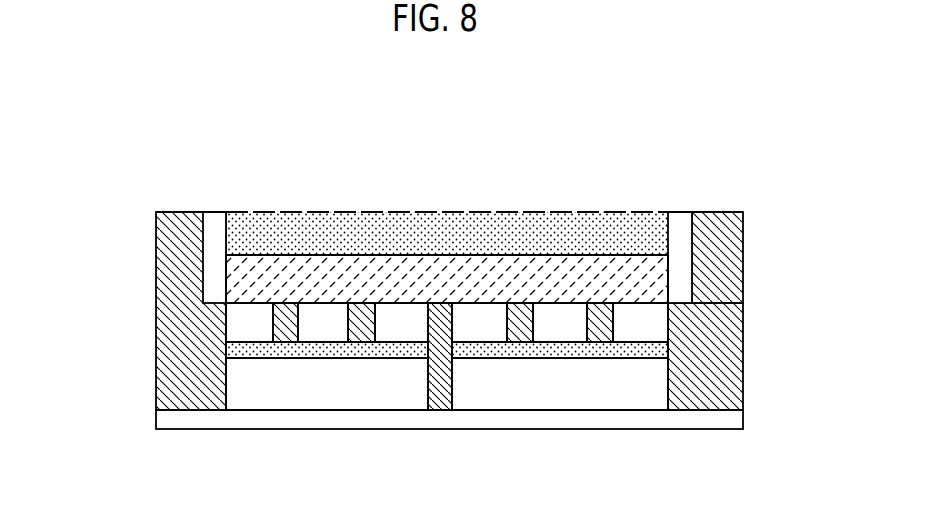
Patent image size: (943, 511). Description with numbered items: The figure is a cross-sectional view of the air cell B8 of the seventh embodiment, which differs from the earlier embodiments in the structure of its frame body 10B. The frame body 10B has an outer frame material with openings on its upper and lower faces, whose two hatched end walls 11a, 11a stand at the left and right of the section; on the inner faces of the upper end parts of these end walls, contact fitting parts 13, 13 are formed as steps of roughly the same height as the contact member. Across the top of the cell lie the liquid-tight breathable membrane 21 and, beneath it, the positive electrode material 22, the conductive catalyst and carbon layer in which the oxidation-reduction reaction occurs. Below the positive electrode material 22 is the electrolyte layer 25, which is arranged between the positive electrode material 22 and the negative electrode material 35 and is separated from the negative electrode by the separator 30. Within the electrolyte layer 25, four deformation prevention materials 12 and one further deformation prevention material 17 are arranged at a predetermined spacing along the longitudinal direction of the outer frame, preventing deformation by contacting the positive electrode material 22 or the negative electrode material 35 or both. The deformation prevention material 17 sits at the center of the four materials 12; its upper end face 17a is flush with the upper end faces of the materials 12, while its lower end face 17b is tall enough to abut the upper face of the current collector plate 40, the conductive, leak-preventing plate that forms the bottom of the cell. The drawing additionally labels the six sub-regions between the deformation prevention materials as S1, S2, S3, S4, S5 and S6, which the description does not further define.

The air cell B8 is at (443, 317).
The frame body 10B is at (436, 317).
The end walls 11a is at (156, 362).
The deformation prevention materials 12 is at (284, 302).
The contact fitting parts 13 is at (207, 245).
The deformation prevention material 17 is at (457, 323).
The upper end face 17a is at (441, 302).
The lower end face 17b is at (433, 413).
The liquid-tight breathable membrane 21 is at (250, 233).
The positive electrode material 22 is at (623, 265).
The electrolyte layer 25 is at (674, 327).
The separator 30 is at (232, 350).
The negative electrode material 35 is at (326, 400).
The current collector plate 40 is at (163, 428).
The sensor region S1 is at (264, 337).
The sensor region S2 is at (337, 337).
The sensor region S3 is at (415, 337).
The sensor region S4 is at (494, 337).
The sensor region S5 is at (574, 337).
The sensor region S6 is at (654, 337).